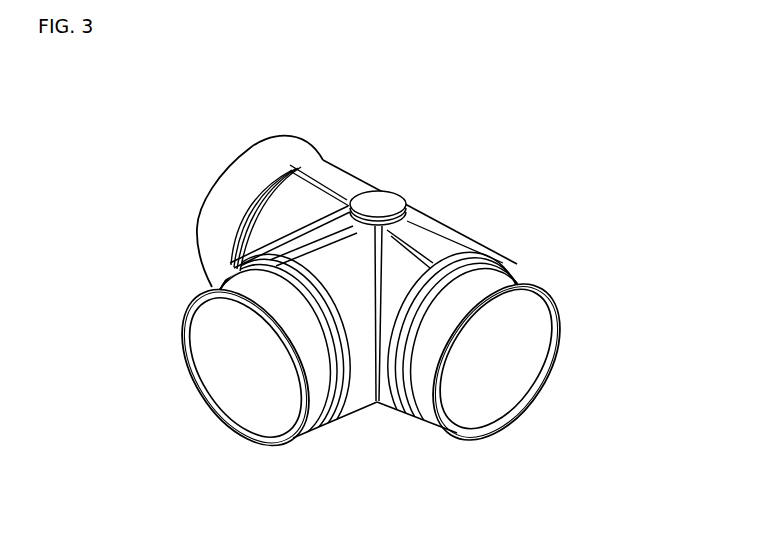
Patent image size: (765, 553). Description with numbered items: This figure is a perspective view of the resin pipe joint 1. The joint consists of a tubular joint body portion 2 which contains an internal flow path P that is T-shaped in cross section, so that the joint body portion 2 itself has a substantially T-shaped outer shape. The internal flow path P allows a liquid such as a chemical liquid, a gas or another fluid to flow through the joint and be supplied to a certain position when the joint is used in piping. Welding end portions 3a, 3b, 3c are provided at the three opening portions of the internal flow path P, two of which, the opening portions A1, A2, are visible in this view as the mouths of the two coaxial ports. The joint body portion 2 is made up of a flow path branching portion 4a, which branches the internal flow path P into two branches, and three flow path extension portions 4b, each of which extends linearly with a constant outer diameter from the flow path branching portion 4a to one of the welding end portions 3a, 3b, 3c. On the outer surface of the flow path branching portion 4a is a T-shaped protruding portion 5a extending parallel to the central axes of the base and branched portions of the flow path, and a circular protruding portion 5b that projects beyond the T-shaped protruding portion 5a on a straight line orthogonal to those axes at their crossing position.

The resin pipe joint 1 is at (590, 131).
The joint body portion 2 is at (579, 198).
The welding end portion 3a is at (258, 390).
The welding end portion 3b is at (507, 362).
The welding end portion 3c is at (199, 213).
The flow path branching portion 4a is at (433, 222).
The flow path extension portion 4b is at (497, 273).
The T-shaped protruding portion 5a is at (309, 178).
The circular protruding portion 5b is at (388, 195).
The opening portion A1 is at (230, 397).
The opening portion A2 is at (516, 372).
The internal flow path P is at (467, 380).